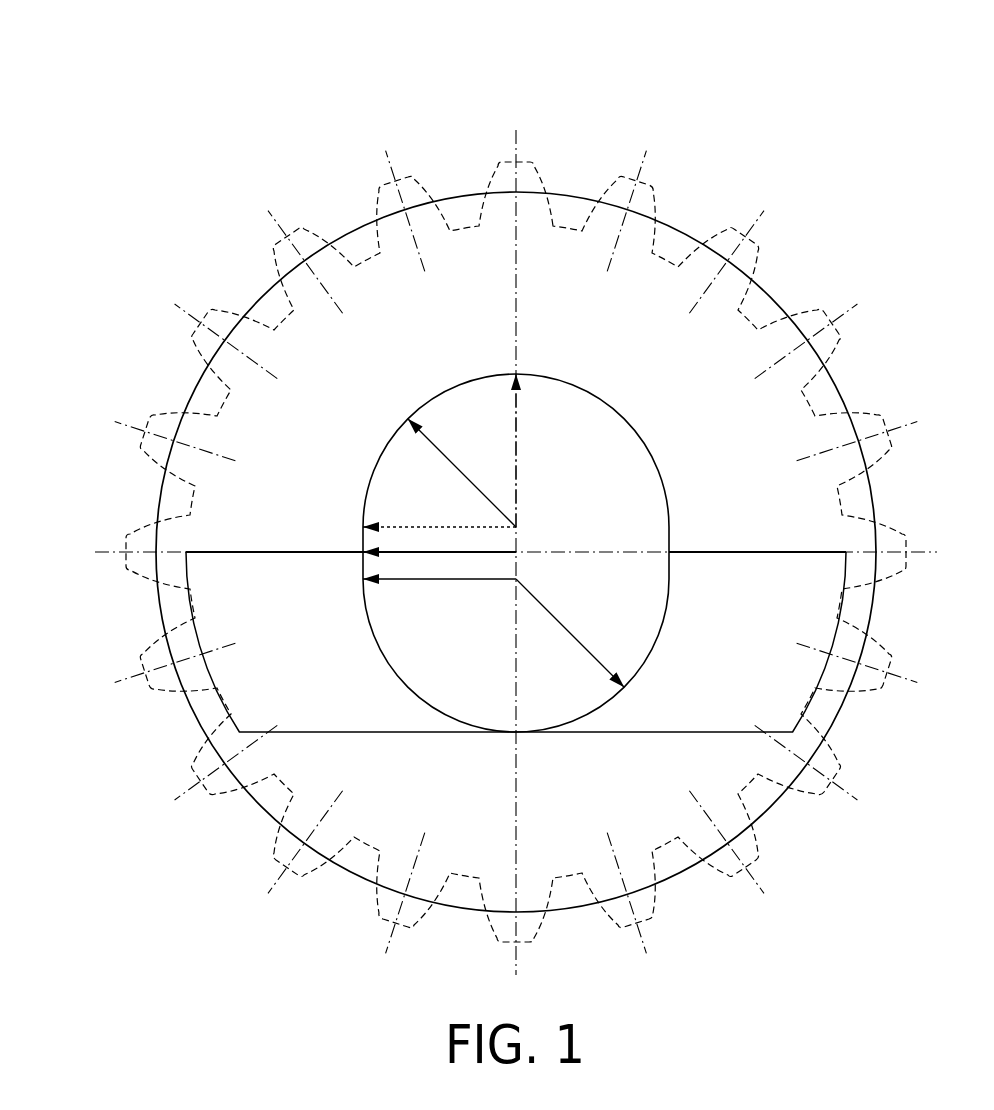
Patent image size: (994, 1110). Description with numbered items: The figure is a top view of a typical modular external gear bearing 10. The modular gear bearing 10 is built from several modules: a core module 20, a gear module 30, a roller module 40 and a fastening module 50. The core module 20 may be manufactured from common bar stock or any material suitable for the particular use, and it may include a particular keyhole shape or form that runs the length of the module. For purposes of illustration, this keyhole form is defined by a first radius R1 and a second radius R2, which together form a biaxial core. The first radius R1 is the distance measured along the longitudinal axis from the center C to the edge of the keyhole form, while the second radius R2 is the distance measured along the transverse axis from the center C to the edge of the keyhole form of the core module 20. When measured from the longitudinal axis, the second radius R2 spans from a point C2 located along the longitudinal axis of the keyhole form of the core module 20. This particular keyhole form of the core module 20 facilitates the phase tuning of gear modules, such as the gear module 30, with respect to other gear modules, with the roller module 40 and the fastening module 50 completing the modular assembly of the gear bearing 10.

The modular external gear bearing 10 is at (485, 487).
The core module 20 is at (630, 413).
The gear module 30 is at (258, 302).
The roller module 40 is at (460, 193).
The fastening module 50 is at (163, 608).
The first radius R1 is at (535, 450).
The second radius R2 is at (516, 553).
The center C is at (520, 552).
The point C2 is at (520, 525).